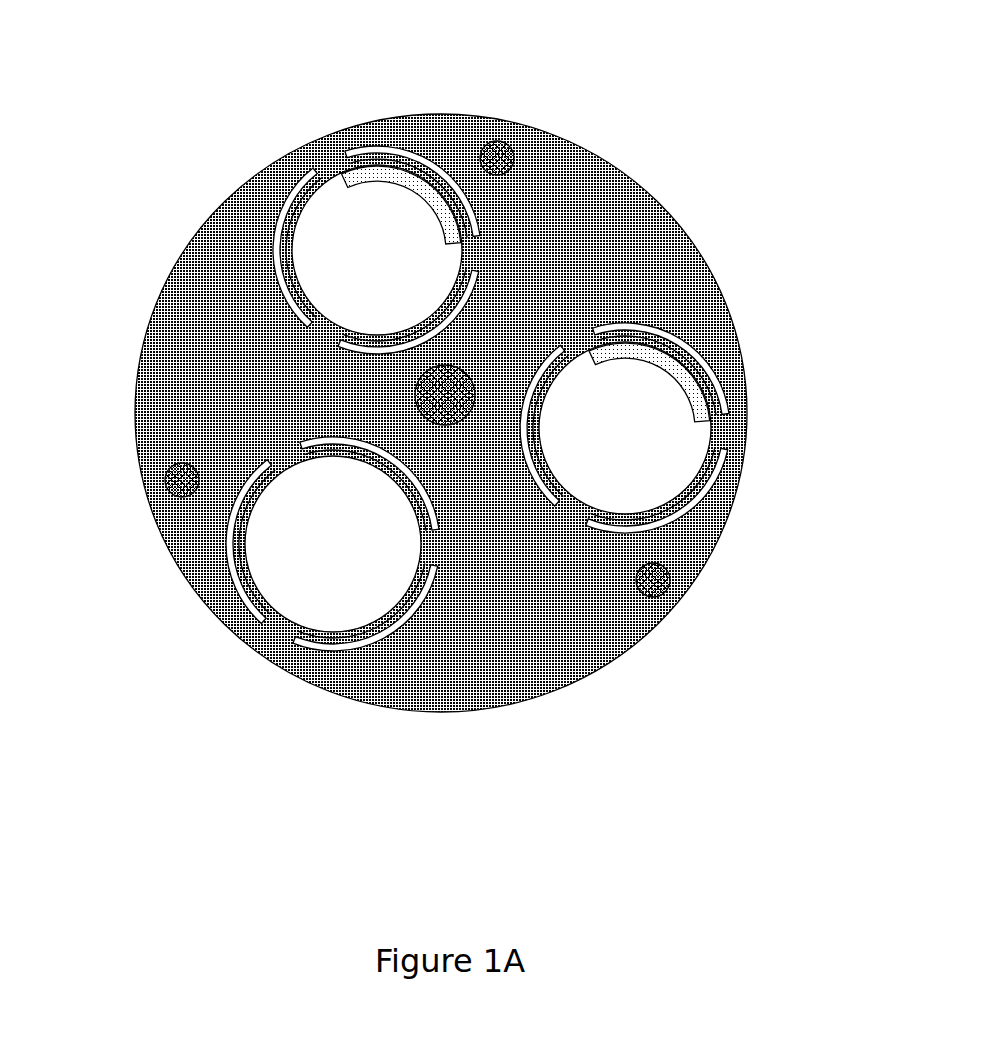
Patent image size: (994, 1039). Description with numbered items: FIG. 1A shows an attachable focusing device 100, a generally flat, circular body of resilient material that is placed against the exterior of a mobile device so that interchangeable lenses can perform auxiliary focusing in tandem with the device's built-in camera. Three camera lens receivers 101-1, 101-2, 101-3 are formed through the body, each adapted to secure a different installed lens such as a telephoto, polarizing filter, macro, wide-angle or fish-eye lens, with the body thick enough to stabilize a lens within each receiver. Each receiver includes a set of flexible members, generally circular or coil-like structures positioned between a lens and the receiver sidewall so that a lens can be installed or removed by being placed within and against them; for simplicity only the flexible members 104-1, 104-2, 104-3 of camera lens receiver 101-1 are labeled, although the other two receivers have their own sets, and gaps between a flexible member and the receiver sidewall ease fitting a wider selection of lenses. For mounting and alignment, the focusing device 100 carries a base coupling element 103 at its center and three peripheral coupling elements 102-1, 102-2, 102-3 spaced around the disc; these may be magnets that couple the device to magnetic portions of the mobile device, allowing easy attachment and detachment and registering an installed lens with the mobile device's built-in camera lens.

The focusing device 100 is at (635, 157).
The camera lens receiver 101-1 is at (292, 557).
The camera lens receiver 101-2 is at (362, 215).
The camera lens receiver 101-3 is at (662, 407).
The peripheral coupling element 102-1 is at (183, 490).
The peripheral coupling element 102-2 is at (505, 148).
The peripheral coupling element 102-3 is at (655, 590).
The base coupling element 103 is at (422, 382).
The flexible member 104-1 is at (344, 652).
The flexible member 104-2 is at (270, 462).
The flexible member 104-3 is at (438, 578).